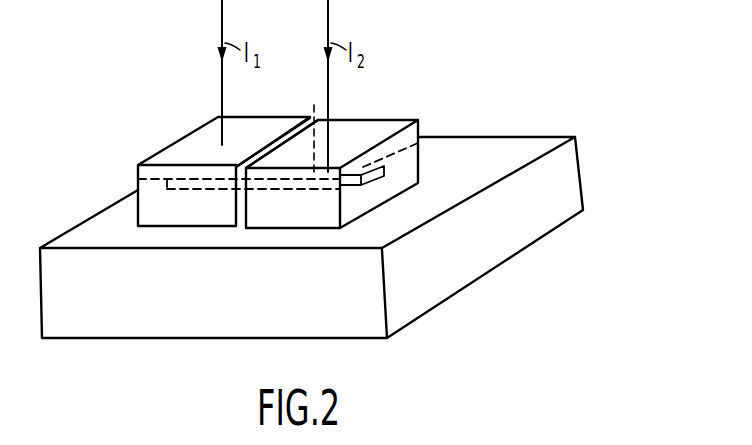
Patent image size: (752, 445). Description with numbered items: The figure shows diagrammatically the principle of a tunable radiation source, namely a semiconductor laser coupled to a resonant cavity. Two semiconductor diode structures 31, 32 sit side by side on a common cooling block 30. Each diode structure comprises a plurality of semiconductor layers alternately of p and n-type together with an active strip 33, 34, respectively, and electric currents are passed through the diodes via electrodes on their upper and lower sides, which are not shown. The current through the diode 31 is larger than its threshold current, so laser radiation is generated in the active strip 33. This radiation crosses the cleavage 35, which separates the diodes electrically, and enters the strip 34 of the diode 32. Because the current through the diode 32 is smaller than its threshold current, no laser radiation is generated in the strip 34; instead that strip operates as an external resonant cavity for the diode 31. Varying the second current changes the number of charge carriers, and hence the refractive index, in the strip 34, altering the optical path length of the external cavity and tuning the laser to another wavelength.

The cooling block 30 is at (121, 321).
The semiconductor diode structure 31 is at (200, 127).
The semiconductor diode structure 32 is at (358, 130).
The active strip 33 is at (138, 179).
The active strip 34 is at (420, 140).
The cleavage 35 is at (297, 125).